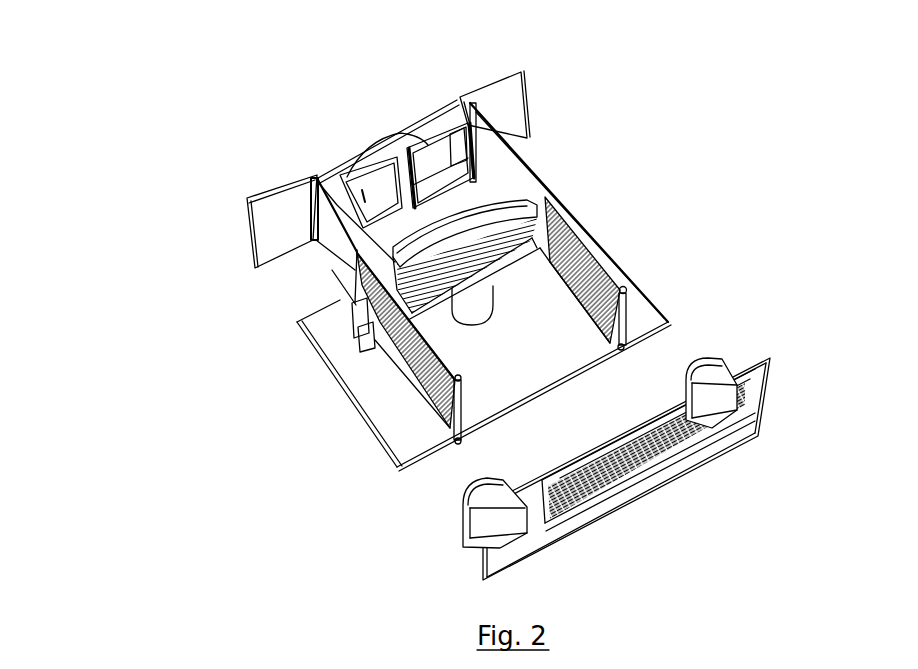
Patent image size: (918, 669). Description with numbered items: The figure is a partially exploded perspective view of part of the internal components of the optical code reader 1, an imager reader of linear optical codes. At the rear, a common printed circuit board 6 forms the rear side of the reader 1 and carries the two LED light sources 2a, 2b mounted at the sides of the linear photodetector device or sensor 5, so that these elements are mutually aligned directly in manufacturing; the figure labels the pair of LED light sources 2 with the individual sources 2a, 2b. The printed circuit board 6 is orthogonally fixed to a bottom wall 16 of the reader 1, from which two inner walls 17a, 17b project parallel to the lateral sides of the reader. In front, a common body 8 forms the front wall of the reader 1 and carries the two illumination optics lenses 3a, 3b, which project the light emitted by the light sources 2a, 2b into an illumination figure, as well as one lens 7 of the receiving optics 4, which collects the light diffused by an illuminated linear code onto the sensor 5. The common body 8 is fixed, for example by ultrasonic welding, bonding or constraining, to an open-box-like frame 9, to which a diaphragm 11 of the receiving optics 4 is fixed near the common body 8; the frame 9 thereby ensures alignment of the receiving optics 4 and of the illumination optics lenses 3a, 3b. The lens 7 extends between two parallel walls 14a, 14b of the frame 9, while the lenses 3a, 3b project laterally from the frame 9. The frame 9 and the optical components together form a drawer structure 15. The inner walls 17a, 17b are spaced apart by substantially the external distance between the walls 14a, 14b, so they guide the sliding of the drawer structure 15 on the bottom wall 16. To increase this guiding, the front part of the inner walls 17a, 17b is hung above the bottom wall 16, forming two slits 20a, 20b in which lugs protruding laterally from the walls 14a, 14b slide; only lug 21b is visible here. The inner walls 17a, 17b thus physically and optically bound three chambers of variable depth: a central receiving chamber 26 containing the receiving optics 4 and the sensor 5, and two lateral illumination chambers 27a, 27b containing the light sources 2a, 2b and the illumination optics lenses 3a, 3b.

The optical code reader 1 is at (522, 172).
The retaining bar 2 is at (592, 436).
The LED light source 2a is at (712, 365).
The LED light source 2b is at (467, 507).
The illumination optics lens 3a is at (510, 112).
The illumination optics lens 3b is at (270, 228).
The receiving optics 4 is at (341, 132).
The linear photodetector device or sensor 5 is at (673, 445).
The printed circuit board 6 is at (748, 420).
The lens of the receiving optics 7 is at (397, 155).
The common body 8 is at (260, 180).
The frame 9 is at (317, 272).
The diaphragm 11 is at (443, 158).
The wall of the frame 14a is at (513, 156).
The wall of the frame 14b is at (371, 387).
The drawer structure 15 is at (176, 176).
The bottom wall 16 is at (655, 303).
The inner wall 17a is at (593, 267).
The inner wall 17b is at (397, 440).
The slit 20a is at (567, 287).
The slit 20b is at (388, 413).
The lug 21b is at (358, 397).
The central receiving chamber 26 is at (507, 364).
The lateral illumination chamber 27a is at (645, 332).
The lateral illumination chamber 27b is at (421, 437).